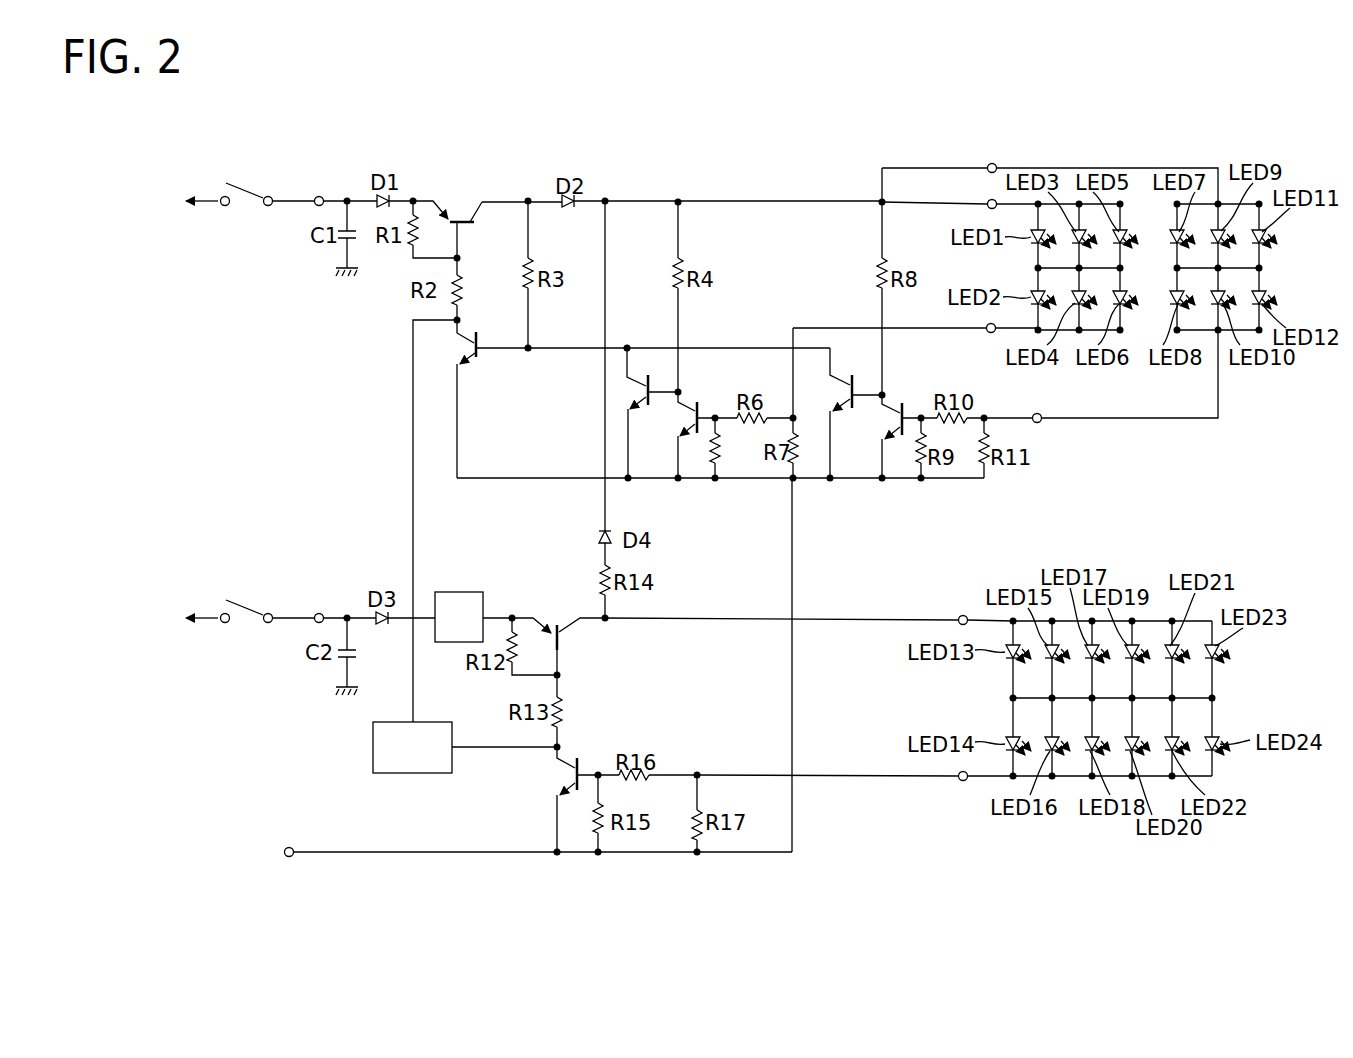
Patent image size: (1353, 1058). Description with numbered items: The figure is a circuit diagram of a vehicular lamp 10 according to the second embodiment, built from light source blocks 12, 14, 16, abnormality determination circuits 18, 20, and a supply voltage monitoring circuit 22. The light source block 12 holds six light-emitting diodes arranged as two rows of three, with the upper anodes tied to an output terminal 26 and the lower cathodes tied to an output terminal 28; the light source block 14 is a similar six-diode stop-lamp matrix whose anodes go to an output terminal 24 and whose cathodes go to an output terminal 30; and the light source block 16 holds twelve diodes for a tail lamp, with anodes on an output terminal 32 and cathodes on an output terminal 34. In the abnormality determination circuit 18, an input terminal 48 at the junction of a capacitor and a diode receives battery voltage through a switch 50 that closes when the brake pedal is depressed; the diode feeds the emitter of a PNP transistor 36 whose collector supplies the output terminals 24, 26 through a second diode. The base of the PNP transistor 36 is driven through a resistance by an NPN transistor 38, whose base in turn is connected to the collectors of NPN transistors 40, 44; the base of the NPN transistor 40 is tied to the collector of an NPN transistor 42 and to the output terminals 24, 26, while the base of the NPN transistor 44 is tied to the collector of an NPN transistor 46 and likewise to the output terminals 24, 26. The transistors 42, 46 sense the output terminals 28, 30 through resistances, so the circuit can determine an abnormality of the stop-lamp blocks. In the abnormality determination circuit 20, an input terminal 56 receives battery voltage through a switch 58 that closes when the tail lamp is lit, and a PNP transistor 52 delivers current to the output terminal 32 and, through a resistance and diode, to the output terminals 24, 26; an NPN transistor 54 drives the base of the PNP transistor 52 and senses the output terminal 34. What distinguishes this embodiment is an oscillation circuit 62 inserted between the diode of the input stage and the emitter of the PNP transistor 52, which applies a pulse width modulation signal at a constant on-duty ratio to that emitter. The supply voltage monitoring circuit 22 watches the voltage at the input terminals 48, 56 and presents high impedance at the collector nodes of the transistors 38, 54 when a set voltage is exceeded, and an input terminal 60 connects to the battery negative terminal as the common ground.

The vehicular lamp 10 is at (695, 154).
The light source block 12 is at (1020, 270).
The light source block 14 is at (1278, 266).
The light source block 16 is at (1276, 702).
The abnormality determination circuit 18 is at (358, 436).
The abnormality determination circuit 20 is at (298, 778).
The supply voltage monitoring circuit 22 is at (410, 773).
The output terminal 24 is at (988, 166).
The output terminal 26 is at (988, 202).
The output terminal 28 is at (989, 332).
The output terminal 30 is at (1040, 423).
The output terminal 32 is at (963, 616).
The output terminal 34 is at (963, 781).
The PNP transistor 36 is at (469, 231).
The NPN transistor 38 is at (482, 362).
The NPN transistor 40 is at (651, 408).
The NPN transistor 42 is at (700, 401).
The NPN transistor 44 is at (852, 375).
The NPN transistor 46 is at (903, 403).
The input terminal 48 is at (319, 196).
The switch 50 is at (246, 182).
The PNP transistor 52 is at (563, 647).
The NPN transistor 54 is at (578, 760).
The input terminal 56 is at (319, 613).
The switch 58 is at (246, 598).
The input terminal 60 is at (284, 852).
The oscillation circuit 62 is at (460, 592).